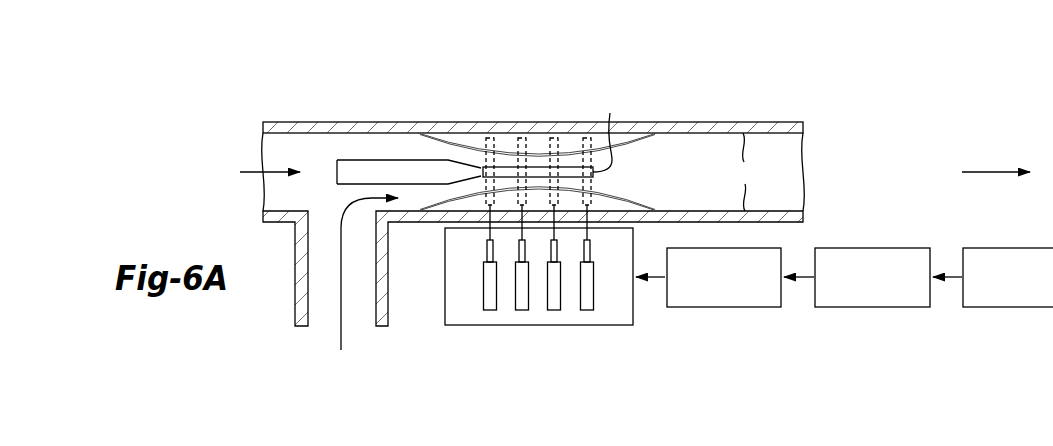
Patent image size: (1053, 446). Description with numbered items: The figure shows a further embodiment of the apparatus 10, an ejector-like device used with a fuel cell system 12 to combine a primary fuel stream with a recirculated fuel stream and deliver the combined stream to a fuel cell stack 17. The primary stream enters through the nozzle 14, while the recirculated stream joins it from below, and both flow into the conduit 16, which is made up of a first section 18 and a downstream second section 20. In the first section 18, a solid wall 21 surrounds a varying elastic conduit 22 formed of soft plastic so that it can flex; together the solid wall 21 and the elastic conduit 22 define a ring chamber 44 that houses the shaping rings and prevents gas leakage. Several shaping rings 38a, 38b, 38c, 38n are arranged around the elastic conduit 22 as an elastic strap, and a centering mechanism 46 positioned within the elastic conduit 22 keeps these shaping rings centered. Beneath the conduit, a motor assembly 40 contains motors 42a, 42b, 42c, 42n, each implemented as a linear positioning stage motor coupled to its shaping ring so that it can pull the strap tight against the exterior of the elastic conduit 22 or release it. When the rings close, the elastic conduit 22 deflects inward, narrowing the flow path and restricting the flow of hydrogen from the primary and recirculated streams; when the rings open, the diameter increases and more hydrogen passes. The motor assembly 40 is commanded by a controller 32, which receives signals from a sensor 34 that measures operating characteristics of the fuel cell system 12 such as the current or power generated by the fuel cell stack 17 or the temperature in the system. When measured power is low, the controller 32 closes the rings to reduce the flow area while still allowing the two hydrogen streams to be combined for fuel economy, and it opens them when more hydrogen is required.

The apparatus 10 is at (386, 76).
The fuel cell system 12 is at (1020, 307).
The nozzle 14 is at (375, 160).
The conduit 16 is at (694, 111).
The fuel cell stack 17 is at (1028, 154).
The first section 18 is at (644, 119).
The second section 20 is at (302, 119).
The solid wall 21 is at (746, 172).
The elastic conduit 22 is at (627, 150).
The controller 32 is at (722, 307).
The sensor 34 is at (872, 307).
The shaping ring 38a is at (490, 122).
The shaping ring 38b is at (522, 122).
The shaping ring 38c is at (554, 122).
The shaping ring 38n is at (587, 122).
The motor assembly 40 is at (617, 325).
The motor 42a is at (490, 310).
The motor 42b is at (522, 310).
The motor 42c is at (554, 310).
The motor 42n is at (587, 310).
The ring chamber 44 is at (447, 125).
The centering mechanism 46 is at (608, 132).